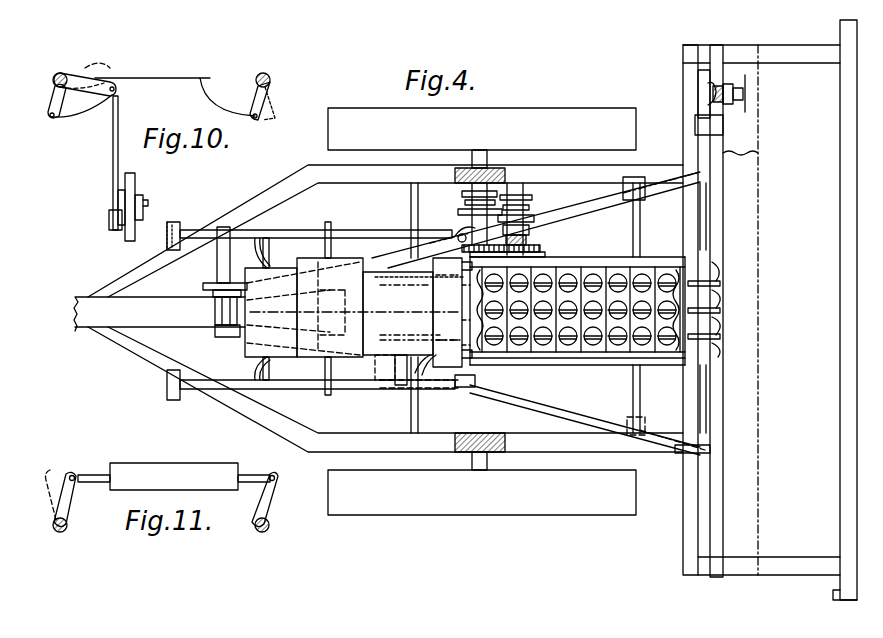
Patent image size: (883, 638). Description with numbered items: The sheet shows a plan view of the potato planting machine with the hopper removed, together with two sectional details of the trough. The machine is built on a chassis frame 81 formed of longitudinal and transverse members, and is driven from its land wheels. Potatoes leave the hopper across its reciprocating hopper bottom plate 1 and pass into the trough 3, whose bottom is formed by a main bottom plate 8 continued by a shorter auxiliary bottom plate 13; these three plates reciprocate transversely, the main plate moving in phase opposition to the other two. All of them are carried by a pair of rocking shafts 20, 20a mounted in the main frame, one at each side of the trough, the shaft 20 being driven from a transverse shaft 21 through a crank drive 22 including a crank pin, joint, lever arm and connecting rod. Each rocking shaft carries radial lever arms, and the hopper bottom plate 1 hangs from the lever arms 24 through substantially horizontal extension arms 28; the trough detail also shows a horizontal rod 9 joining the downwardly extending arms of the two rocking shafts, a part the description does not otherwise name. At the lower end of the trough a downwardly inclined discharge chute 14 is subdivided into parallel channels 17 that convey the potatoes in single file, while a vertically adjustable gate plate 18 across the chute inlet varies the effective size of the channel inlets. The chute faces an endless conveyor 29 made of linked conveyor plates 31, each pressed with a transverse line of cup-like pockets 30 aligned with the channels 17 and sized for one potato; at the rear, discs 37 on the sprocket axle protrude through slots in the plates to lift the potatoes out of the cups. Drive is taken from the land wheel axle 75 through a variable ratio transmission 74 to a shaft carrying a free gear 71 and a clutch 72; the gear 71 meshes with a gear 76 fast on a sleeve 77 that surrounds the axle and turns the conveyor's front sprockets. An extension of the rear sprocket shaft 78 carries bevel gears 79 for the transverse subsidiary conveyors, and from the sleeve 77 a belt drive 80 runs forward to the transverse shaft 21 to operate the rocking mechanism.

In FIG. 4, the hopper bottom plate 1 is at (352, 307).
In FIG. 11, the hopper bottom plate 1 is at (164, 463).
In FIG. 4, the trough 3 is at (396, 287).
In FIG. 4, the main bottom plate 8 is at (275, 360).
In FIG. 10, the connecting rod 9 is at (176, 78).
In FIG. 4, the auxiliary bottom plate 13 is at (440, 384).
In FIG. 4, the discharge chute 14 is at (512, 392).
In FIG. 4, the channels 17 is at (467, 299).
In FIG. 4, the gate plate 18 is at (467, 334).
In FIG. 4, the rocking shaft 20 is at (298, 230).
In FIG. 10, the rocking shaft 20 is at (62, 75).
In FIG. 11, the rocking shaft 20 is at (66, 528).
In FIG. 4, the rocking shaft 20a is at (313, 389).
In FIG. 10, the rocking shaft 20a is at (268, 77).
In FIG. 11, the rocking shaft 20a is at (268, 528).
In FIG. 4, the transverse shaft 21 is at (222, 318).
In FIG. 10, the transverse shaft 21 is at (146, 206).
In FIG. 4, the crank drive 22 is at (222, 255).
In FIG. 10, the crank drive 22 is at (113, 104).
In FIG. 11, the lever arm 24 is at (70, 500).
In FIG. 11, the extension arms 28 is at (88, 475).
In FIG. 4, the endless conveyor 29 is at (586, 367).
In FIG. 4, the pockets 30 is at (583, 272).
In FIG. 4, the conveyor plates 31 is at (550, 360).
In FIG. 4, the discs 37 is at (712, 330).
In FIG. 4, the free gear 71 is at (540, 250).
In FIG. 4, the clutch 72 is at (528, 228).
In FIG. 4, the variable ratio transmission 74 is at (472, 195).
In FIG. 4, the land wheel axle 75 is at (484, 152).
In FIG. 4, the gear 76 is at (480, 228).
In FIG. 4, the sleeve 77 is at (463, 260).
In FIG. 4, the rear sprocket shaft 78 is at (698, 218).
In FIG. 4, the bevel gears 79 is at (698, 105).
In FIG. 4, the belt drive 80 is at (248, 337).
In FIG. 4, the chassis frame 81 is at (328, 444).